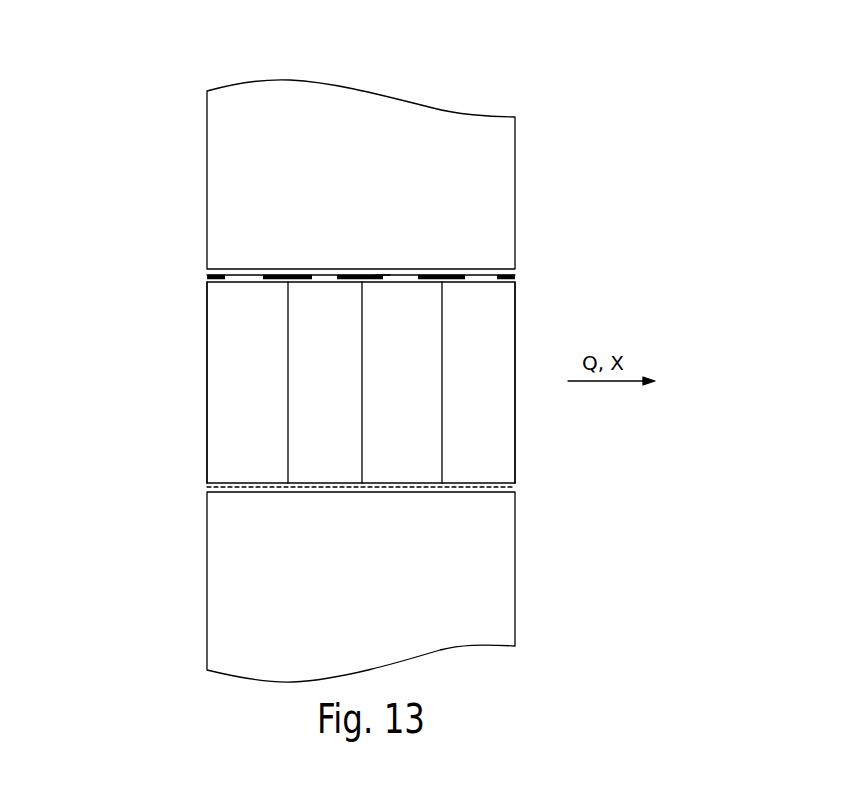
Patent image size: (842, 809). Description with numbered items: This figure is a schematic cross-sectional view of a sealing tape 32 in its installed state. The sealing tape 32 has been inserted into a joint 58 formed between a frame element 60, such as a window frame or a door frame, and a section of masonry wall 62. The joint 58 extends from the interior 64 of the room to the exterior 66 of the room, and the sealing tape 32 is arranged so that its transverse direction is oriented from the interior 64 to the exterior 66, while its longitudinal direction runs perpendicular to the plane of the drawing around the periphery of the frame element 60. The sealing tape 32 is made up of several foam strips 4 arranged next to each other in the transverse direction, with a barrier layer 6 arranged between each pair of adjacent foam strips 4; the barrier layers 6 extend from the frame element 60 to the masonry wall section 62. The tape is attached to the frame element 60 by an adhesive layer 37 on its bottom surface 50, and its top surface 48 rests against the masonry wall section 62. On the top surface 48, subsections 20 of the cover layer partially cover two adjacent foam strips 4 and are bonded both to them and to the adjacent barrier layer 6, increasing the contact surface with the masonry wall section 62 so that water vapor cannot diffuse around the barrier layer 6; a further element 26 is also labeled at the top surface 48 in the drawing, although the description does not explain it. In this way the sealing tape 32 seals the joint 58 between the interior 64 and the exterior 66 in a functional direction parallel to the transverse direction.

The foam strips 4 is at (397, 420).
The barrier layer 6 is at (288, 425).
The subsection of the cover layer 20 is at (362, 274).
The conductor layer 26 is at (403, 275).
The sealing tape 32 is at (537, 305).
The adhesive layer 37 is at (516, 487).
The top surface 48 is at (382, 275).
The bottom surface 50 is at (257, 480).
The joint 58 is at (195, 448).
The frame element 60 is at (492, 629).
The masonry wall section 62 is at (478, 160).
The interior of the room 64 is at (75, 315).
The exterior of the room 66 is at (665, 317).